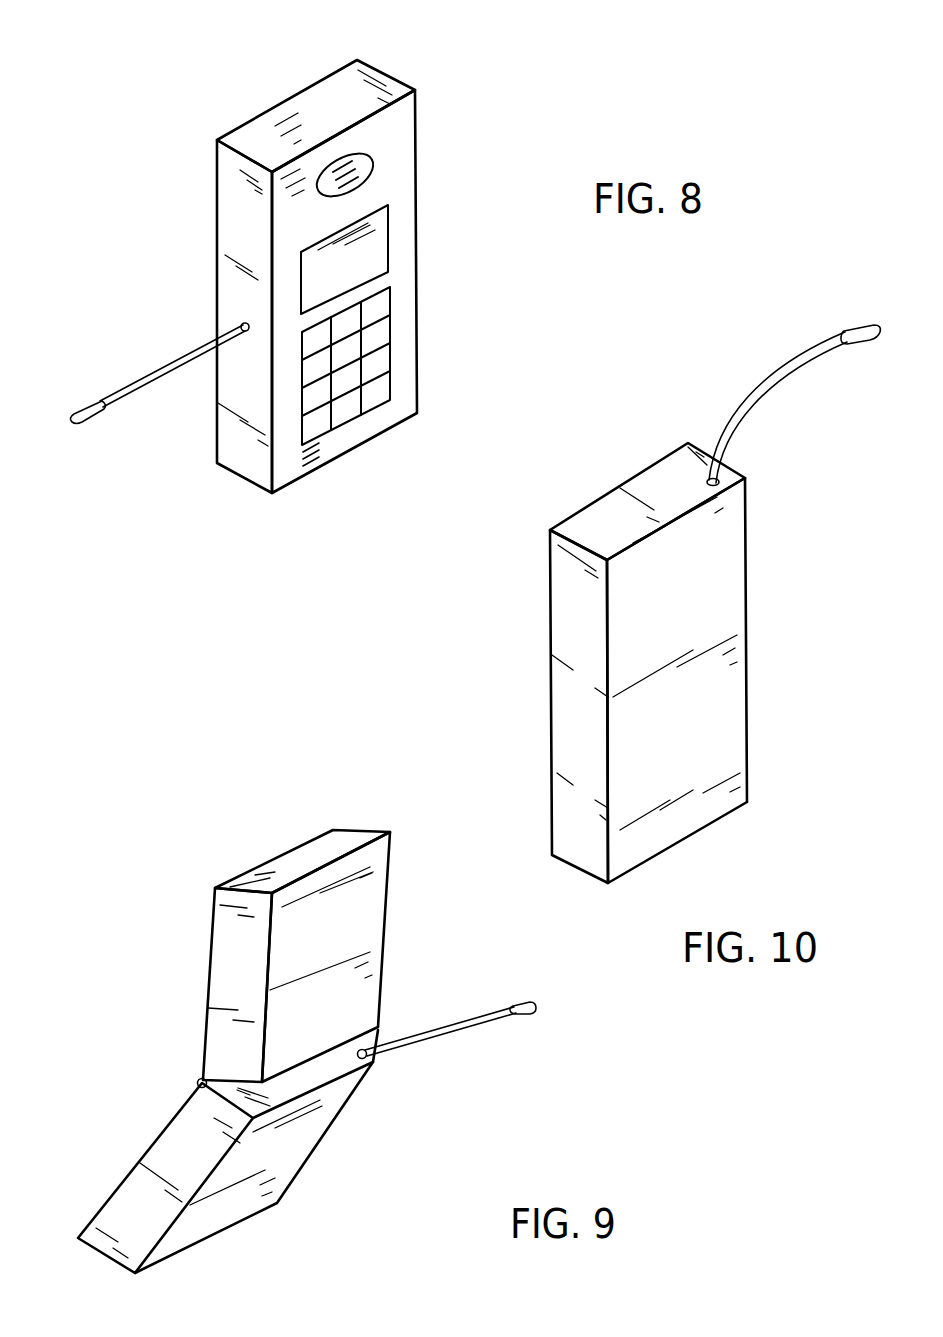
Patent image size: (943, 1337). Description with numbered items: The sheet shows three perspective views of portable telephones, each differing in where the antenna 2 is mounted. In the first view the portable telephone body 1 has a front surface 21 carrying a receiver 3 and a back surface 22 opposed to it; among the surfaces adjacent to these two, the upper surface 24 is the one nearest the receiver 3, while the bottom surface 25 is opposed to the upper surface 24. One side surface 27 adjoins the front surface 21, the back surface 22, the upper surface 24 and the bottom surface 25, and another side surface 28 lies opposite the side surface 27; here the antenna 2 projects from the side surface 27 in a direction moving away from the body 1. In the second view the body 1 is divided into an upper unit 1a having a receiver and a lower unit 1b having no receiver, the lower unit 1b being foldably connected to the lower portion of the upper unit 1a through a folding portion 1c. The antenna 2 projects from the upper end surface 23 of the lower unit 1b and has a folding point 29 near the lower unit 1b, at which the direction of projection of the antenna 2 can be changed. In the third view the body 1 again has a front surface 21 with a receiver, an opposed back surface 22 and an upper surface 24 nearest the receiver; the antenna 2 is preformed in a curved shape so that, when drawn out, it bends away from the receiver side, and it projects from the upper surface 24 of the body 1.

In FIG. 8, the portable telephone body 1 is at (397, 407).
In FIG. 10, the portable telephone body 1 is at (574, 848).
In FIG. 9, the portable telephone body 1 is at (237, 1019).
In FIG. 9, the upper unit 1a is at (345, 841).
In FIG. 9, the lower unit 1b is at (137, 1190).
In FIG. 9, the folding portion 1c is at (197, 1083).
In FIG. 8, the antenna 2 is at (84, 410).
In FIG. 10, the antenna 2 is at (876, 331).
In FIG. 9, the antenna 2 is at (447, 1017).
In FIG. 8, the receiver 3 is at (367, 163).
In FIG. 8, the front surface 21 is at (400, 167).
In FIG. 10, the front surface 21 is at (592, 490).
In FIG. 8, the back surface 22 is at (272, 99).
In FIG. 10, the back surface 22 is at (720, 572).
In FIG. 9, the upper end surface 23 is at (323, 1073).
In FIG. 8, the upper surface 24 is at (367, 91).
In FIG. 10, the upper surface 24 is at (672, 482).
In FIG. 8, the bottom surface 25 is at (346, 470).
In FIG. 8, the side surface 27 is at (247, 453).
In FIG. 8, the side surface 28 is at (424, 363).
In FIG. 9, the folding point 29 is at (380, 1050).